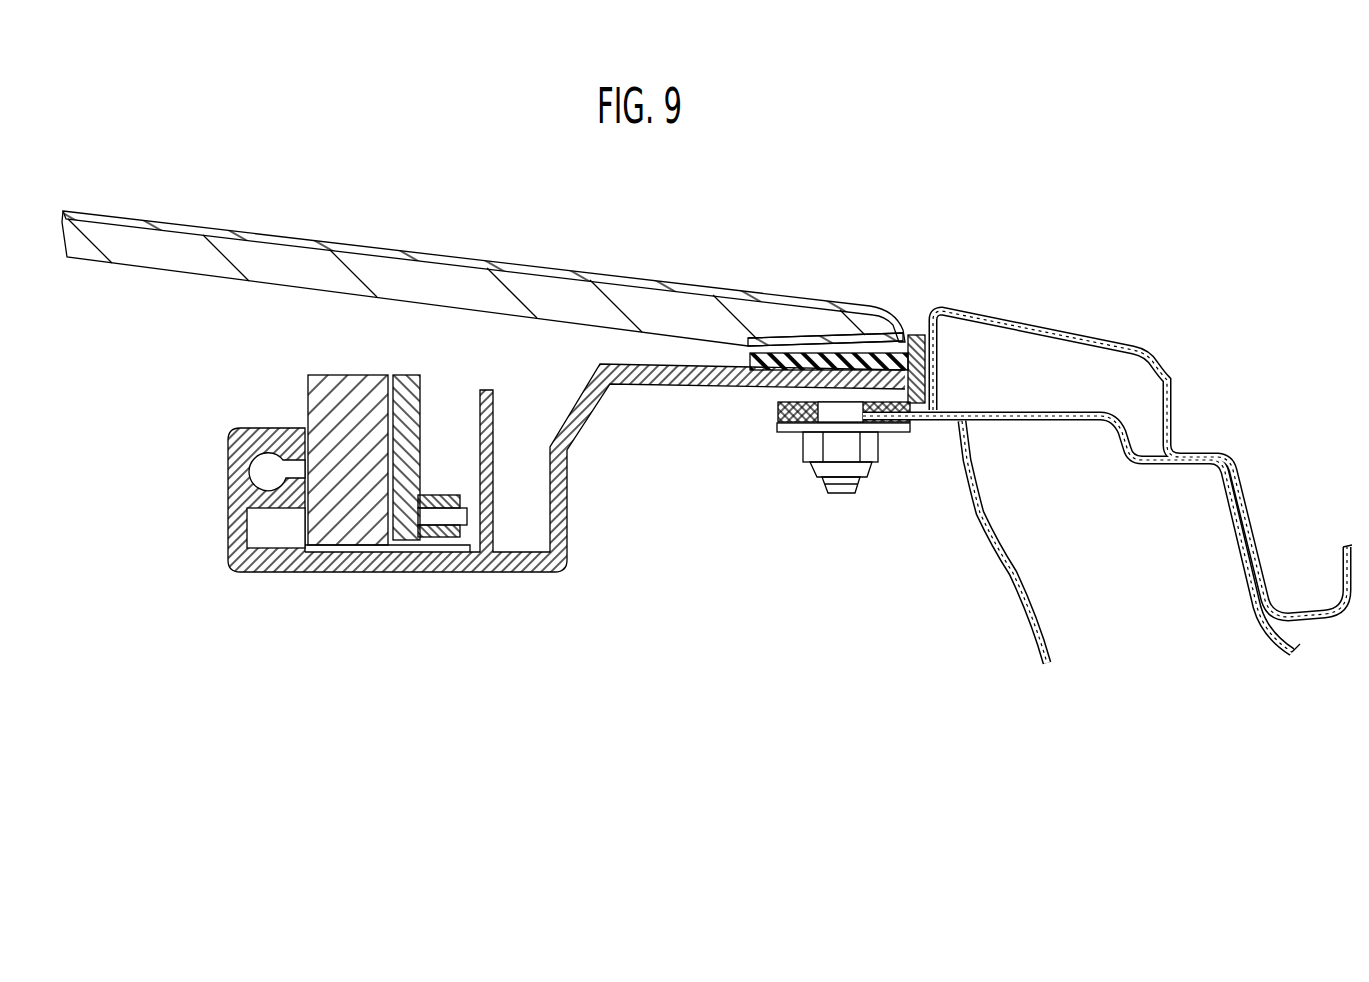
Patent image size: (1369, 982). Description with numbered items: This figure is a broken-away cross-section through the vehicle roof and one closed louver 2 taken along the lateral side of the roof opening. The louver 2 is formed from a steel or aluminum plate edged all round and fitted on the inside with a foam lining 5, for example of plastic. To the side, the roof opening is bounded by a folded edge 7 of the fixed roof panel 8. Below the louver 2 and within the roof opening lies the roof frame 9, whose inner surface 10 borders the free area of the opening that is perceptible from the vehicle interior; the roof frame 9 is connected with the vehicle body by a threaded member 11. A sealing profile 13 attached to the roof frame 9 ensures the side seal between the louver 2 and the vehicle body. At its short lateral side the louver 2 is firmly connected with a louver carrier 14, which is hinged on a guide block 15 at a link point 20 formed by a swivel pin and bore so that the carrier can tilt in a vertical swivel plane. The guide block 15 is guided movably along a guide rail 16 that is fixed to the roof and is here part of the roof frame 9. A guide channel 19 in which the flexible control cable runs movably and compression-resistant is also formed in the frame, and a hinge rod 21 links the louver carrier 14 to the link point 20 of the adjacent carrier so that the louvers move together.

The louver 2 is at (483, 249).
The foam lining 5 is at (157, 256).
The folded edge 7 is at (935, 356).
The fixed roof panel 8 is at (1070, 334).
The roof frame 9 is at (526, 491).
The inner surface 10 is at (226, 449).
The threaded member 11 is at (840, 493).
The sealing profile 13 is at (919, 333).
The louver carrier 14 is at (405, 372).
The guide block 15 is at (352, 398).
The guide rail 16 is at (408, 557).
The guide channel 19 is at (270, 455).
The link point 20 is at (455, 547).
The hinge rod 21 is at (443, 495).